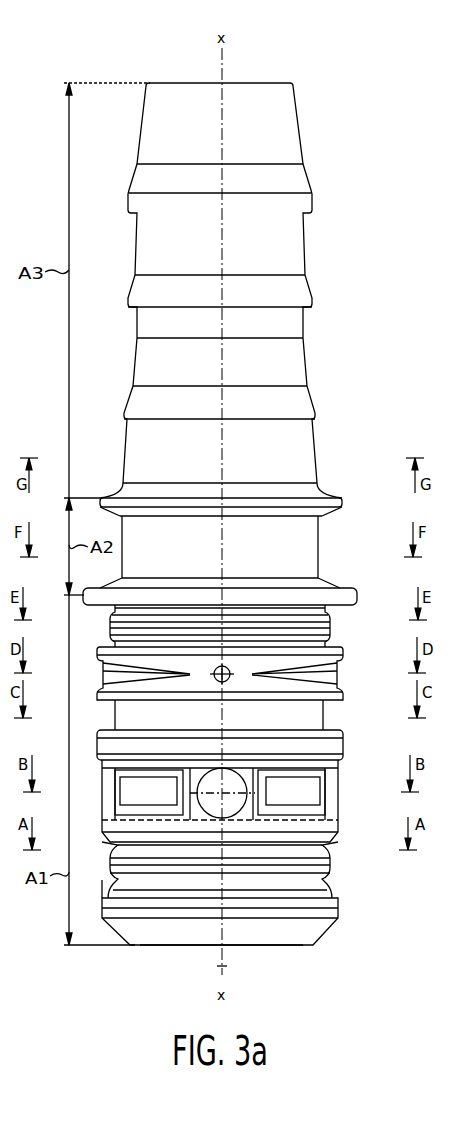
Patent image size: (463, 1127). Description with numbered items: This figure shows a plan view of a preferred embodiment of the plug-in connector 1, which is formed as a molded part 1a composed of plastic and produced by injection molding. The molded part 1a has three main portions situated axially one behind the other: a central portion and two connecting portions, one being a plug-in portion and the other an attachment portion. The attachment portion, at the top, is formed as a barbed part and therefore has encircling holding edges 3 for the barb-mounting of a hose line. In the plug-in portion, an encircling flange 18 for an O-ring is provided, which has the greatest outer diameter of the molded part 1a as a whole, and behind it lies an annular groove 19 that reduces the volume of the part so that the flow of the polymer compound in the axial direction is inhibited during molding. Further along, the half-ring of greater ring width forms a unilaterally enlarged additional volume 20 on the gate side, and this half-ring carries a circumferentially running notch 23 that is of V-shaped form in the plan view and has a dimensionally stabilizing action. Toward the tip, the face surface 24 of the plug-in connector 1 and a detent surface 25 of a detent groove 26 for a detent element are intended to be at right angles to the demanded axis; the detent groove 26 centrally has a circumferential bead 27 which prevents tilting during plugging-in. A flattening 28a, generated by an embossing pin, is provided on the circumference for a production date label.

The plug-in connector 1 is at (168, 975).
The molded part 1a is at (294, 108).
The encircling holding edges 3 is at (311, 208).
The encircling flange 18 is at (343, 598).
The annular groove 19 is at (333, 636).
The enlarged additional volume 20 is at (250, 683).
The notch 23 is at (340, 677).
The face surface 24 is at (277, 950).
The detent surface 25 is at (334, 888).
The detent groove 26 is at (345, 847).
The circumferential bead 27 is at (108, 882).
The flattening 28a is at (205, 760).